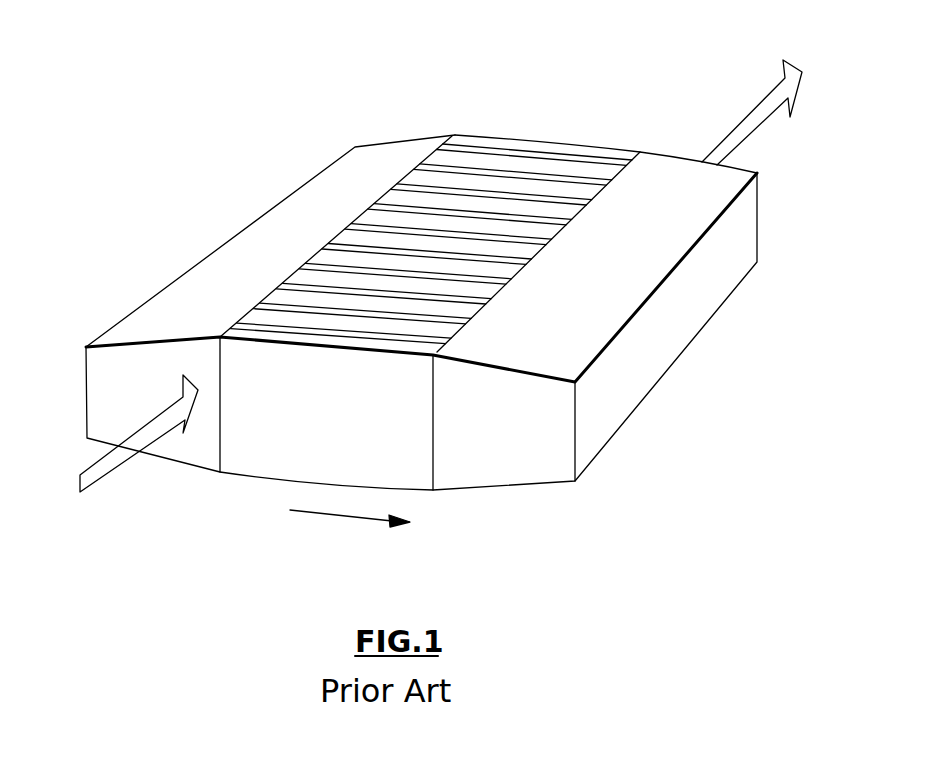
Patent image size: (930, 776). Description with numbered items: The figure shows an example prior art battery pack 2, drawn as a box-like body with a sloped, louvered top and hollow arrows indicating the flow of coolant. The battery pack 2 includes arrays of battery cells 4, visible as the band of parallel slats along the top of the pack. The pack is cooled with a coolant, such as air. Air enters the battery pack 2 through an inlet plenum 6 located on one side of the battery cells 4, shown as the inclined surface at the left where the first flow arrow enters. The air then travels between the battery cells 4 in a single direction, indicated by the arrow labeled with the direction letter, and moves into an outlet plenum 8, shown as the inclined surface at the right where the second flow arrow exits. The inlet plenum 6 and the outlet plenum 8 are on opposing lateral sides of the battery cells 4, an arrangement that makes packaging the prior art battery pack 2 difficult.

The battery pack 2 is at (675, 92).
The battery cells 4 is at (532, 148).
The inlet plenum 6 is at (229, 270).
The outlet plenum 8 is at (630, 283).